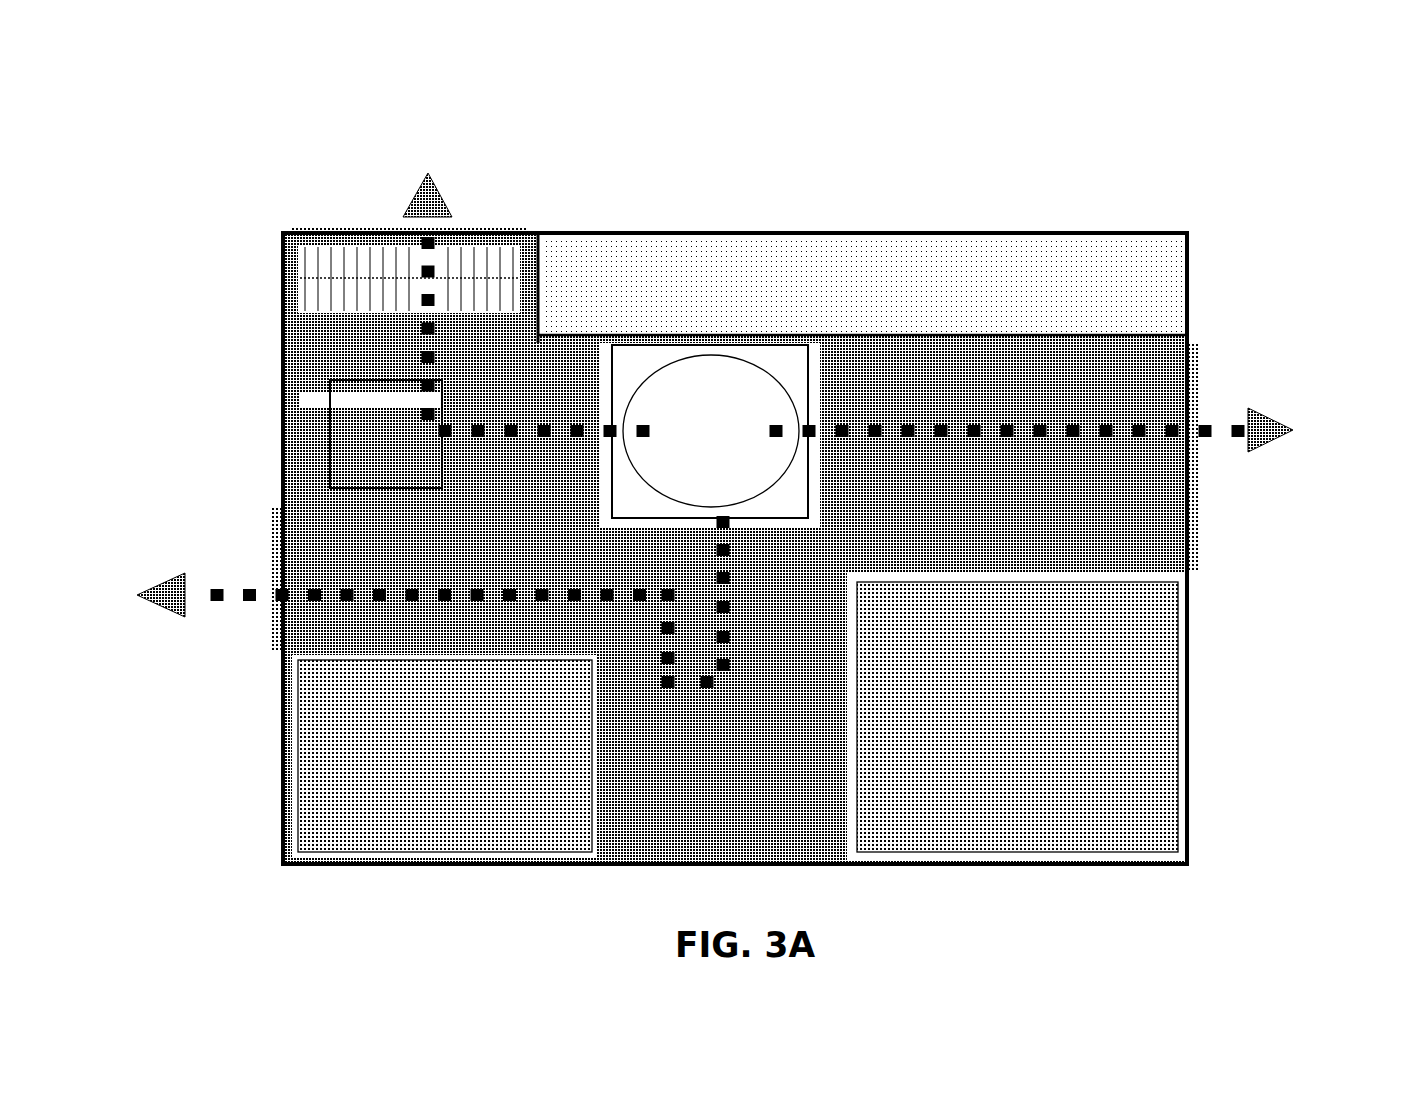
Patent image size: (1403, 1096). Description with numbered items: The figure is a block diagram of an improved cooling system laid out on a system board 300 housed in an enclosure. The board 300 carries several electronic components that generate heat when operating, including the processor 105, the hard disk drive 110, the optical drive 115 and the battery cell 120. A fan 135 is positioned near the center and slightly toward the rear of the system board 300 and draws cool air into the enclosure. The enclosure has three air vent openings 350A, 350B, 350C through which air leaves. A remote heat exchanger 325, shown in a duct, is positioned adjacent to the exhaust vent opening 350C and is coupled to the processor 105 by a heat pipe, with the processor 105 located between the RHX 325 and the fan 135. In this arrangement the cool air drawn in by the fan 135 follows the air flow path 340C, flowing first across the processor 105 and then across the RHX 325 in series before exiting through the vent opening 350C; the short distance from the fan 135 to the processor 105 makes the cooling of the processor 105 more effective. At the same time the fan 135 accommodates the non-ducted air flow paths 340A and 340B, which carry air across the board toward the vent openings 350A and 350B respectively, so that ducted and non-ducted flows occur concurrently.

The system board 300 is at (1095, 200).
The processor 105 is at (371, 434).
The hard disk drive 110 is at (444, 756).
The optical drive 115 is at (1016, 716).
The battery cell 120 is at (862, 288).
The fan 135 is at (710, 435).
The remote heat exchanger 325 is at (487, 263).
The air flow path 340A is at (1230, 458).
The air flow path 340B is at (213, 628).
The air flow path 340C is at (412, 183).
The vent opening 350A is at (1195, 348).
The vent opening 350B is at (245, 525).
The vent opening 350C is at (347, 215).